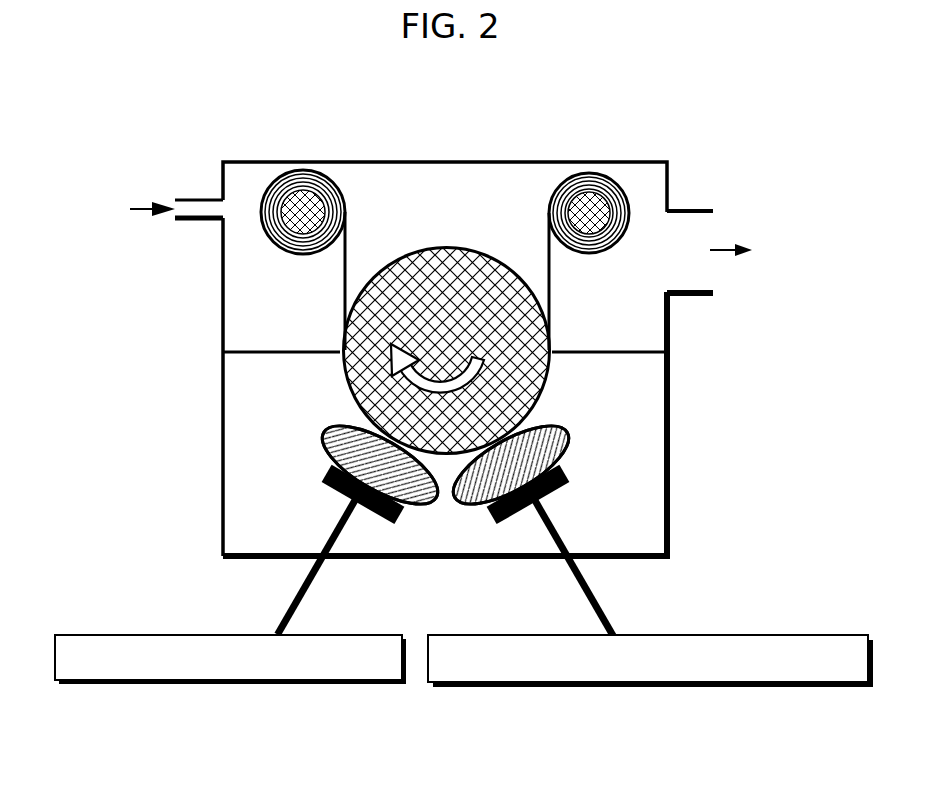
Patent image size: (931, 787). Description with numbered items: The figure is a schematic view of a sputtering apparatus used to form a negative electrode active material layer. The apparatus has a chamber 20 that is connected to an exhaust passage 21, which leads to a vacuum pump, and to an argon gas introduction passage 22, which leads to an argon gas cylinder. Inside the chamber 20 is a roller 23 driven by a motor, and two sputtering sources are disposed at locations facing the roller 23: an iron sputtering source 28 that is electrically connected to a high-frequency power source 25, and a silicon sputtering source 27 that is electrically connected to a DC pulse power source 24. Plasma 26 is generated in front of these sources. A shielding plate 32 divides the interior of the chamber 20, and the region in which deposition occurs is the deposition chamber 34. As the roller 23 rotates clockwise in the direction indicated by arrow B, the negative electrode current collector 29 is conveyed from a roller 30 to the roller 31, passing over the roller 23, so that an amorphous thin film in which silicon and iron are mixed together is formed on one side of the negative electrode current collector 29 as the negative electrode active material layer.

The chamber 20 is at (637, 162).
The exhaust passage 21 is at (698, 208).
The argon gas introduction passage 22 is at (197, 198).
The roller 23 is at (432, 275).
The DC pulse power source 24 is at (242, 684).
The high-frequency power source 25 is at (633, 684).
The plasma 26 is at (320, 431).
The silicon sputtering source 27 is at (322, 478).
The iron sputtering source 28 is at (557, 488).
The negative electrode current collector 29 is at (549, 280).
The roller 30 is at (589, 212).
The roller 31 is at (302, 205).
The shielding plate 32 is at (262, 353).
The deposition chamber 34 is at (627, 386).
The arrow B is at (440, 354).